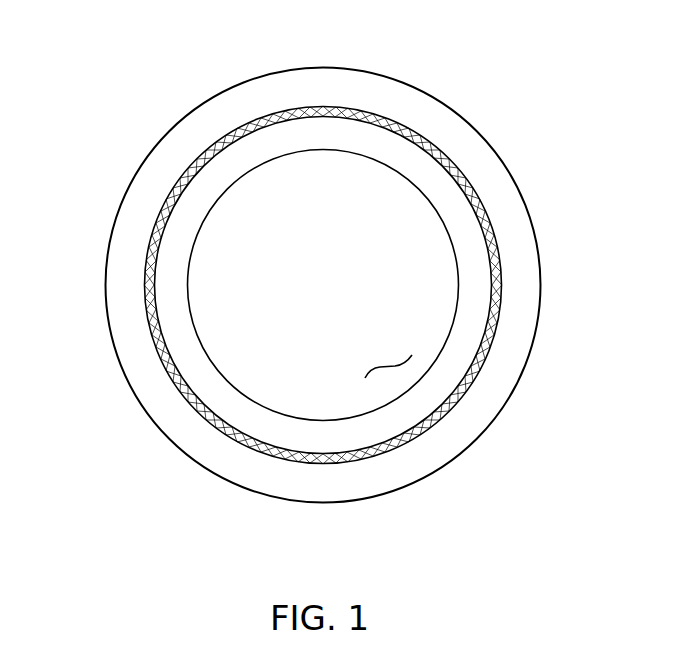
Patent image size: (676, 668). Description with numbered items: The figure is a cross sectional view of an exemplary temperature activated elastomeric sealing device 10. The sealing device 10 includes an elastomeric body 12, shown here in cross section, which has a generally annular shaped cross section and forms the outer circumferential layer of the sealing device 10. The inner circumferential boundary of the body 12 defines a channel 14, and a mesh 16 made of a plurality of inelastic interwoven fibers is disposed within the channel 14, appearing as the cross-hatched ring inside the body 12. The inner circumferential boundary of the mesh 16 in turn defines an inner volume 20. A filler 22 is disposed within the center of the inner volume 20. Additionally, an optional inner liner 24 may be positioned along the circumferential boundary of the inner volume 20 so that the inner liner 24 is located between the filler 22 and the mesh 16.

The temperature activated elastomeric sealing device 10 is at (128, 115).
The elastomeric body 12 is at (355, 68).
The channel 14 is at (448, 158).
The mesh 16 is at (522, 297).
The inner volume 20 is at (447, 384).
The filler 22 is at (388, 367).
The inner liner 24 is at (363, 435).